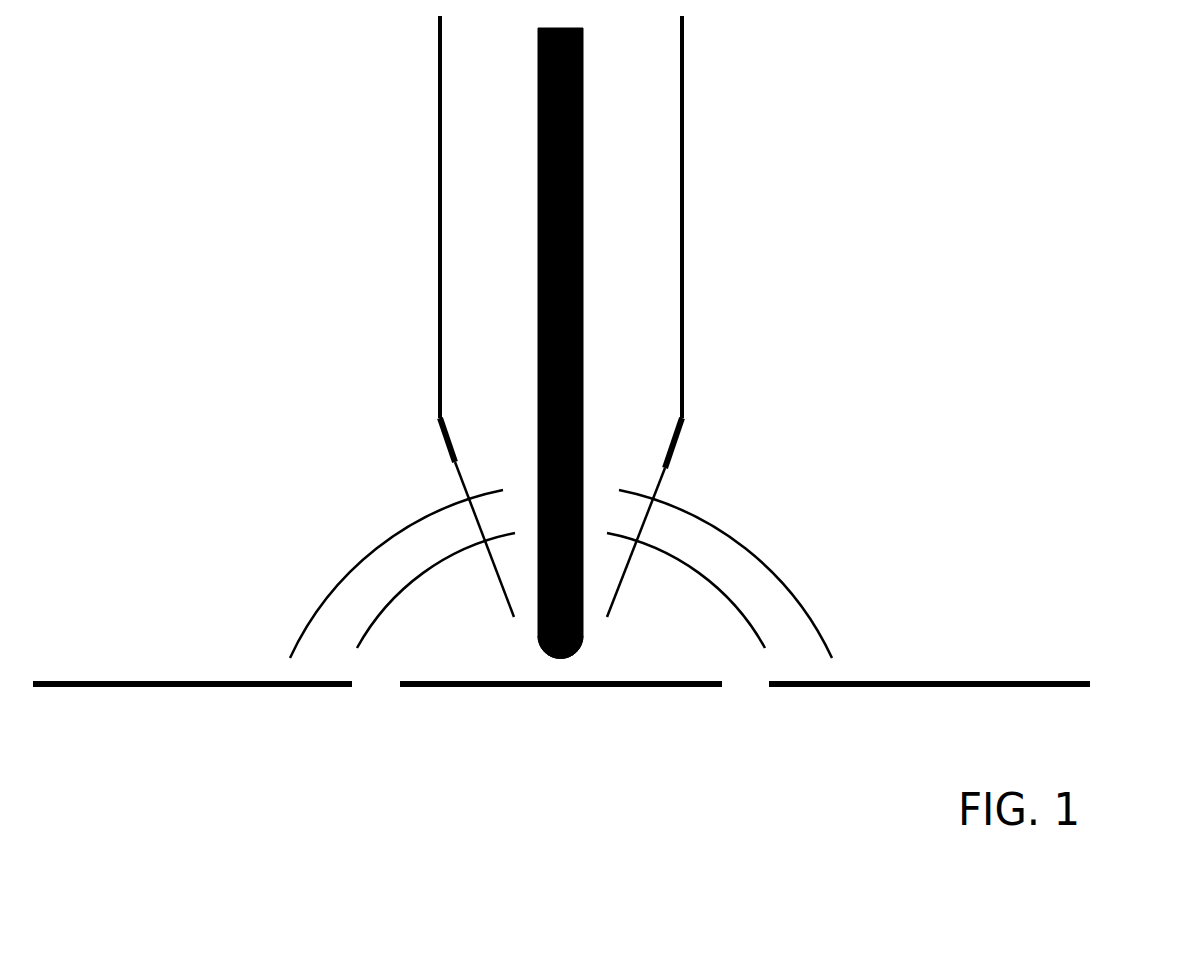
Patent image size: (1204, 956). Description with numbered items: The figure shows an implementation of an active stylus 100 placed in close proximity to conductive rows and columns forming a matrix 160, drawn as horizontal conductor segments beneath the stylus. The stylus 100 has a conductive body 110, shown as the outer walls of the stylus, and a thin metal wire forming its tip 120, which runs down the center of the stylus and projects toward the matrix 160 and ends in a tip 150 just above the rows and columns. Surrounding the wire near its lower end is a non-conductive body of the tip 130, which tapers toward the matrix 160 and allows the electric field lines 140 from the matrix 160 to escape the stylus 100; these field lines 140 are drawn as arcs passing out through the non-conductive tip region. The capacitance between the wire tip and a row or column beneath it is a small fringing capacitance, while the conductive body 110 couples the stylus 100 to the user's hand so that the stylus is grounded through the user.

The active stylus 100 is at (343, 169).
The conductive body 110 is at (692, 105).
The thin metal wire forming tip 120 is at (598, 222).
The non-conductive body of the tip 130 is at (670, 487).
The electric field lines 140 is at (836, 619).
The tip of stylus wire 150 is at (530, 642).
The matrix 160 is at (267, 707).